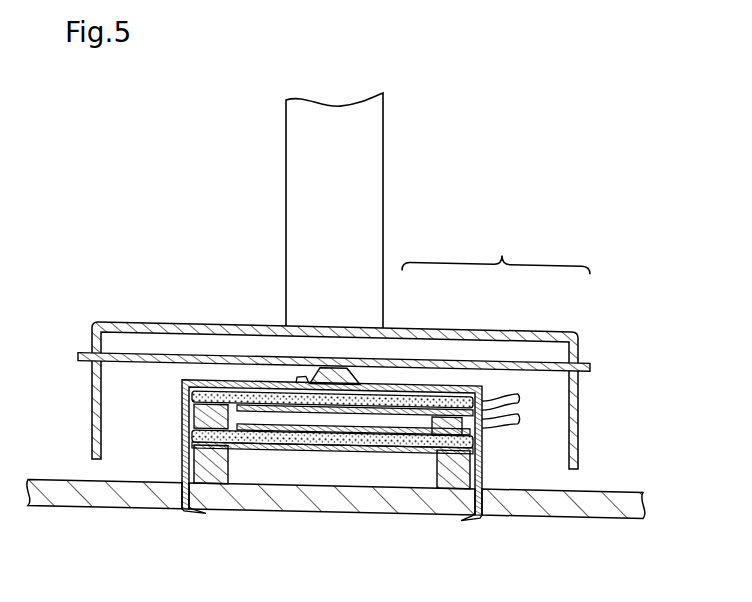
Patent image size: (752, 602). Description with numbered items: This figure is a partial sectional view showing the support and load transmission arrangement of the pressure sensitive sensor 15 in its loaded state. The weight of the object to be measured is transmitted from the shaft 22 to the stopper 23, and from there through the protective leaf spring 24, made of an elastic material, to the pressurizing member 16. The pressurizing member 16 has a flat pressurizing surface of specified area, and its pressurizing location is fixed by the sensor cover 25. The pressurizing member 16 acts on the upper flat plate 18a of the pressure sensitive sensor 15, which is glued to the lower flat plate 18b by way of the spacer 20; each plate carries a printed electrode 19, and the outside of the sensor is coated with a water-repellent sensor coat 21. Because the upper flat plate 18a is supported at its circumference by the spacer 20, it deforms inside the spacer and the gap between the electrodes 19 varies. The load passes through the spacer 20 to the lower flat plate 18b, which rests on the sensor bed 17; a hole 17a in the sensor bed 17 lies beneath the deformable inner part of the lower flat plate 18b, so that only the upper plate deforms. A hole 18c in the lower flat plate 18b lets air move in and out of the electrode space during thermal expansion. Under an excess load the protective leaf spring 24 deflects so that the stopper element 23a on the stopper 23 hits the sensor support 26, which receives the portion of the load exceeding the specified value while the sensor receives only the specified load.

The pressure sensitive sensor 15 is at (496, 251).
The pressurizing member 16 is at (330, 370).
The sensor bed 17 is at (207, 470).
The hole 17a is at (282, 476).
The upper flat plate 18a is at (420, 398).
The lower flat plate 18b is at (518, 391).
The hole 18c is at (215, 387).
The electrode 19 is at (442, 416).
The spacer 20 is at (475, 412).
The sensor coat 21 is at (378, 431).
The shaft 22 is at (300, 161).
The stopper 23 is at (152, 331).
The stopper element 23a is at (90, 434).
The protective leaf spring 24 is at (290, 361).
The sensor cover 25 is at (182, 413).
The sensor support 26 is at (355, 510).